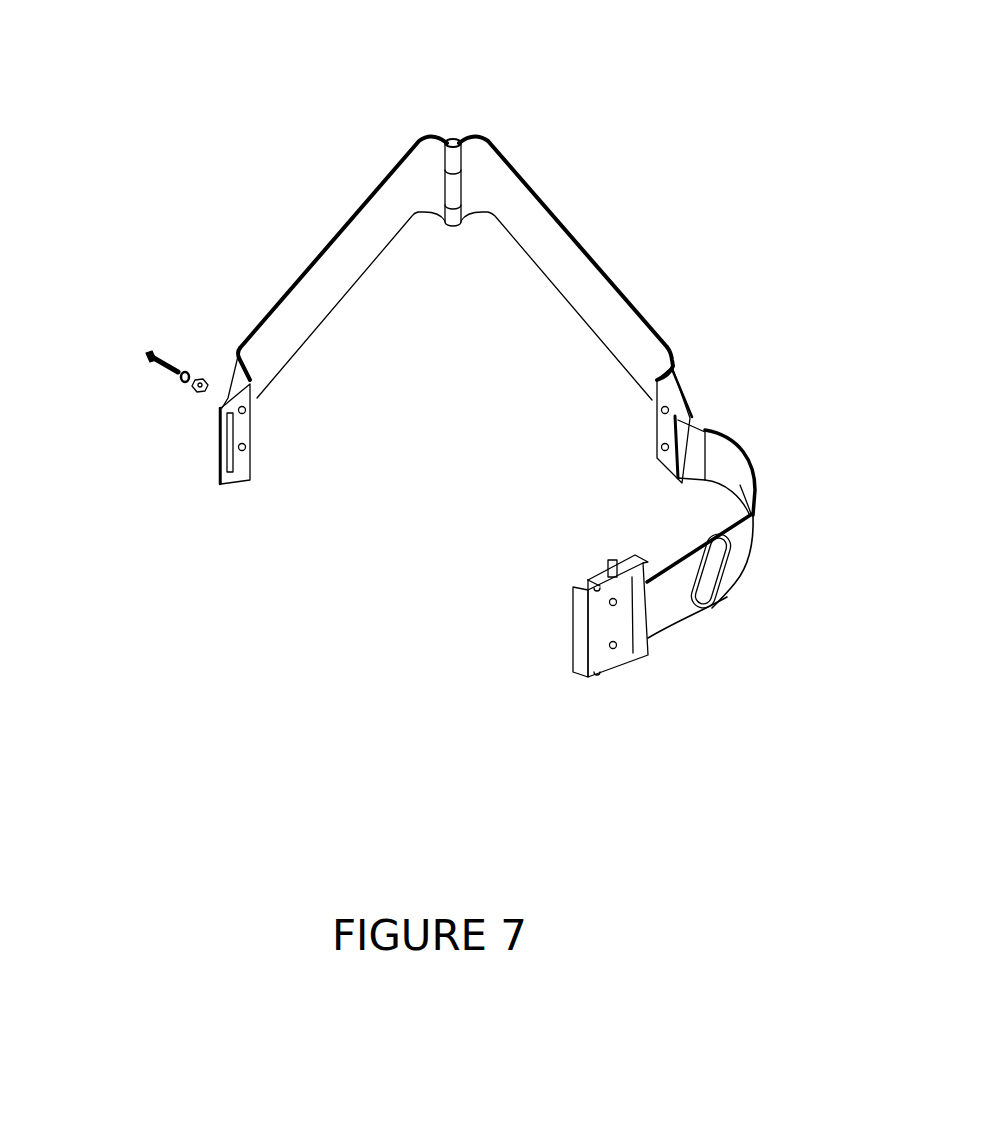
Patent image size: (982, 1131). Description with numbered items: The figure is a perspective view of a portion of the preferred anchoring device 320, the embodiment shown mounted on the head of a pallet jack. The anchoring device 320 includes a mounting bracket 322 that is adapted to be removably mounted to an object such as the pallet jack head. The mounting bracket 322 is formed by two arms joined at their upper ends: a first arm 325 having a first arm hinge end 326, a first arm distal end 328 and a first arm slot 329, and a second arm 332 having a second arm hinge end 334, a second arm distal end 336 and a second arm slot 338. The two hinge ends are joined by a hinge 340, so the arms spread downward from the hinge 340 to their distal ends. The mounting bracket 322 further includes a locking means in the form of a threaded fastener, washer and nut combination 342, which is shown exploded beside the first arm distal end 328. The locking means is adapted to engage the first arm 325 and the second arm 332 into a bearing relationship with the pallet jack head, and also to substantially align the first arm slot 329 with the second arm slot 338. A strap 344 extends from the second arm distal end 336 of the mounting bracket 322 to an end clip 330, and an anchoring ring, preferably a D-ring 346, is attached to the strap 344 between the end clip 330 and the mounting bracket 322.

The anchoring device 320 is at (712, 320).
The mounting bracket 322 is at (618, 159).
The first arm 325 is at (322, 273).
The first arm hinge end 326 is at (408, 138).
The first arm distal end 328 is at (230, 355).
The first arm slot 329 is at (222, 462).
The end clip 330 is at (580, 630).
The second arm 332 is at (563, 252).
The second arm hinge end 334 is at (500, 139).
The second arm distal end 336 is at (678, 366).
The second arm slot 338 is at (678, 403).
The hinge 340 is at (450, 138).
The threaded fastener, washer and nut combination 342 is at (150, 392).
The strap 344 is at (732, 478).
The D-ring 346 is at (753, 512).